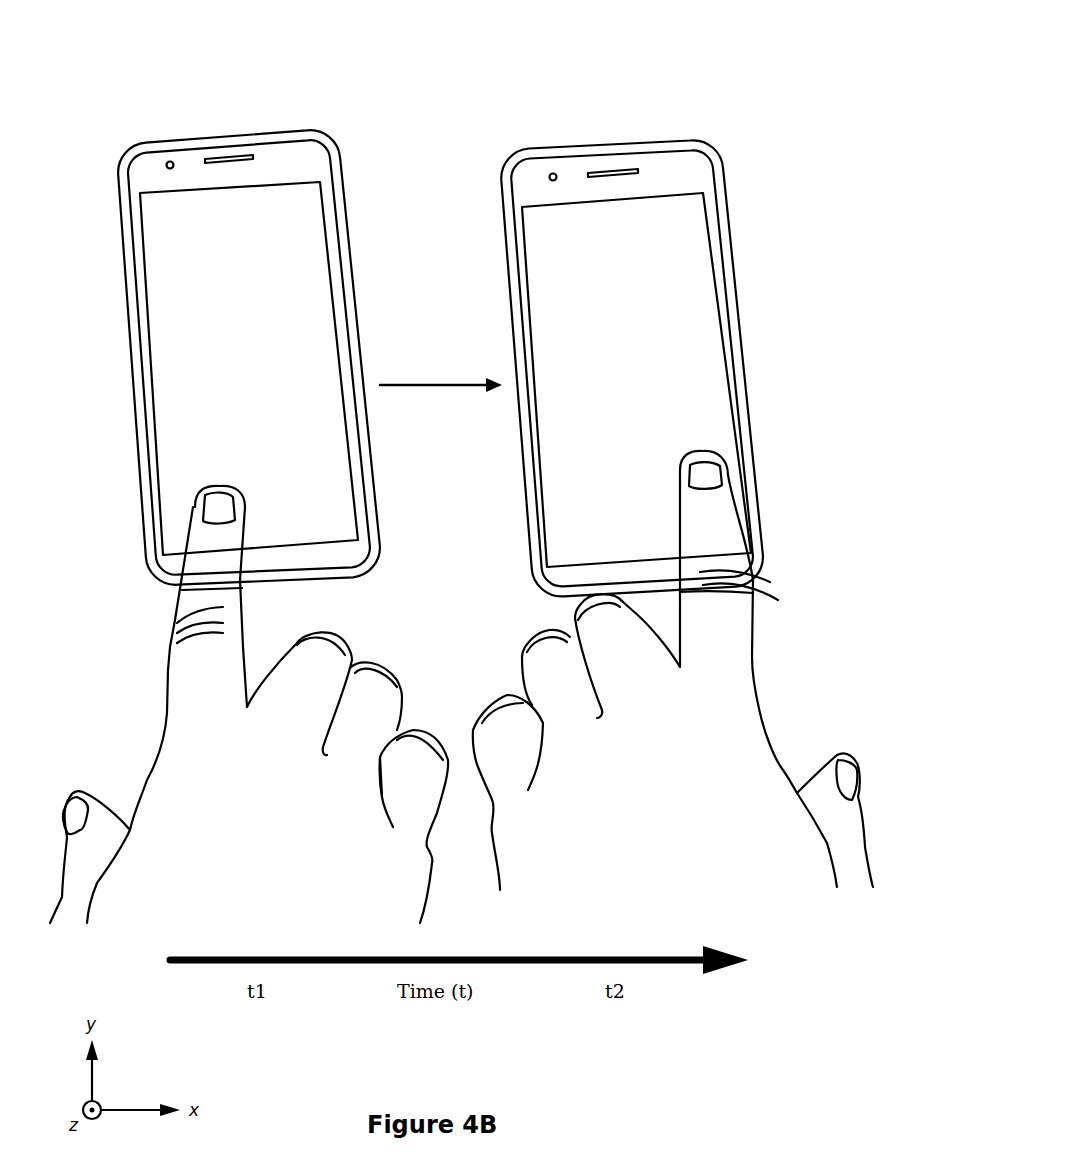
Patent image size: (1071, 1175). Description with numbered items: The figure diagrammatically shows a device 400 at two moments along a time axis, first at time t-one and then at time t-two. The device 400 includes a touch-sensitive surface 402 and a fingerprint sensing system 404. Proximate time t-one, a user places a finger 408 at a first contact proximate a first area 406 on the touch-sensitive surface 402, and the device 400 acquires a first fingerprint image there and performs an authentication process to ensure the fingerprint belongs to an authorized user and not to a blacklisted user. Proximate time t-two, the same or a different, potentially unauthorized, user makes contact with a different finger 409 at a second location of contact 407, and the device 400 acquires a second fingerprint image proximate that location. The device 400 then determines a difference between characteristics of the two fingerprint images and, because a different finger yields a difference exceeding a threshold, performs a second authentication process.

The device 400 is at (296, 48).
The touch-sensitive surface 402 is at (268, 185).
The fingerprint sensing system 404 is at (140, 253).
The first area 406 is at (183, 533).
The second location of contact 407 is at (680, 487).
The finger 408 is at (168, 668).
The different finger 409 is at (748, 658).